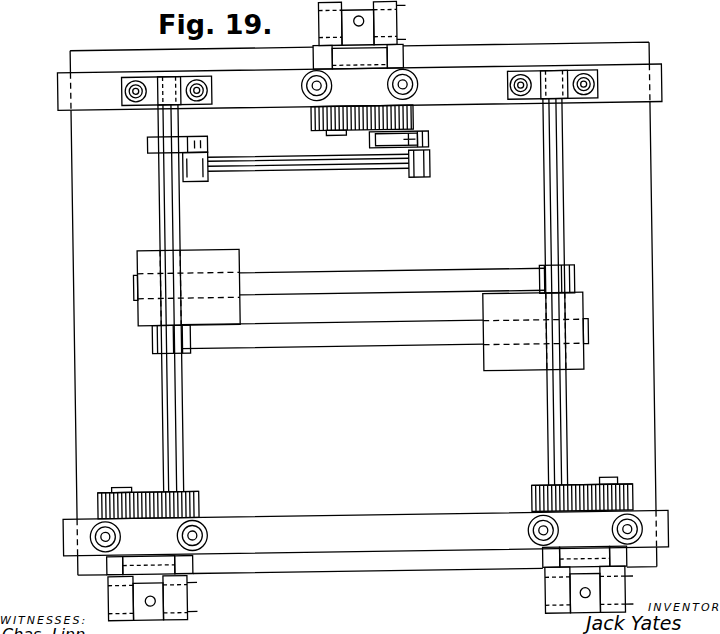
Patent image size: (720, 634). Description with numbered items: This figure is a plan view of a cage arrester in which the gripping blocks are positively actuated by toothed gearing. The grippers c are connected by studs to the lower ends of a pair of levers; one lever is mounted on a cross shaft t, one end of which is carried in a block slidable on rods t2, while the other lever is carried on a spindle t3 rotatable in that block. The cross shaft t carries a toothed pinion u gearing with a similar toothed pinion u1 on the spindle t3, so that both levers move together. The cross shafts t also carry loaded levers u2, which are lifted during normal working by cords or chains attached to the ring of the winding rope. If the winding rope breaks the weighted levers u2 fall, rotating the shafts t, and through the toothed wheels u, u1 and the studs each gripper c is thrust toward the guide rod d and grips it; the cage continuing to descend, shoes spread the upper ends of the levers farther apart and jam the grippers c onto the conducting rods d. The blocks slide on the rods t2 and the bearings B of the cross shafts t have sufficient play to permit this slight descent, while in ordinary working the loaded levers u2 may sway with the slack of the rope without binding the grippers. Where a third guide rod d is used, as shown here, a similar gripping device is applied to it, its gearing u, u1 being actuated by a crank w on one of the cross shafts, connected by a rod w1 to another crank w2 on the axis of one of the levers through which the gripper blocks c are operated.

The bearings B is at (138, 88).
The grippers c is at (324, 26).
The guide rod d is at (368, 21).
The cross shaft t is at (177, 229).
The rods t2 is at (175, 534).
The spindle t3 is at (136, 482).
The toothed pinion u is at (414, 116).
The toothed pinion u1 is at (625, 487).
The loaded levers u2 is at (377, 358).
The crank w is at (150, 143).
The rod w1 is at (326, 170).
The crank w2 is at (432, 139).